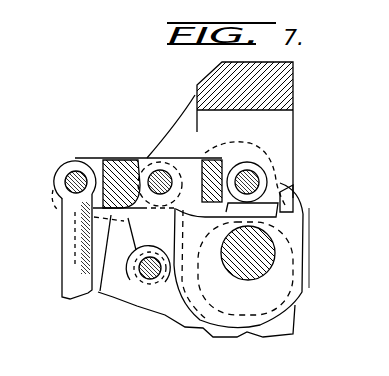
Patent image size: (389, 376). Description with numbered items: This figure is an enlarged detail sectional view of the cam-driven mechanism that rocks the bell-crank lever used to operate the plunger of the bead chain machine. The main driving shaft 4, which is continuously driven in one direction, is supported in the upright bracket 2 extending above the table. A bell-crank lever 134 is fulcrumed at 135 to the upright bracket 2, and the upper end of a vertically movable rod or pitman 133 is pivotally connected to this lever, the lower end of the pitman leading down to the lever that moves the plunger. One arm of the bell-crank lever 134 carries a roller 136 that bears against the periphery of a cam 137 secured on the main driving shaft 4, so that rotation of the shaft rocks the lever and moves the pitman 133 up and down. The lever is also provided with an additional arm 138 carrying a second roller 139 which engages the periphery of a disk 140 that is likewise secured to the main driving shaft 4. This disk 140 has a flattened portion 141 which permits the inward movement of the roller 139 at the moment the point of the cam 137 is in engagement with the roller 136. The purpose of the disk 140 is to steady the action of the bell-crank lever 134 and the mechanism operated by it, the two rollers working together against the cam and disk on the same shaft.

The upright bracket 2 is at (294, 91).
The main driving shaft 4 is at (275, 253).
The pitman 133 is at (65, 266).
The bell-crank lever 134 is at (122, 158).
The fulcrum 135 is at (167, 170).
The roller 136 is at (265, 166).
The cam 137 is at (292, 192).
The additional arm 138 is at (169, 228).
The roller 139 is at (141, 290).
The disk 140 is at (293, 297).
The flattened portion 141 is at (307, 274).